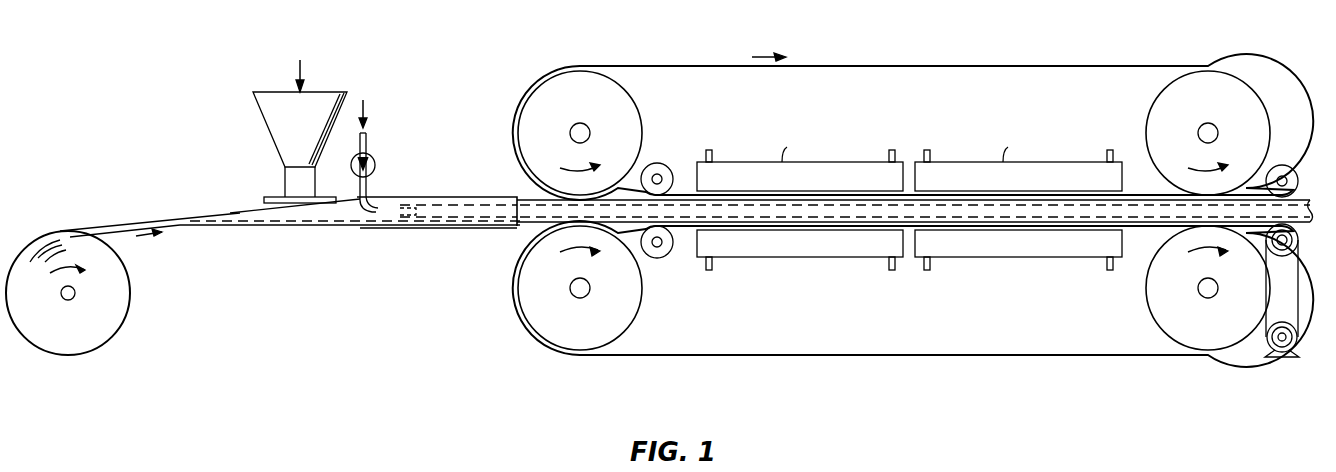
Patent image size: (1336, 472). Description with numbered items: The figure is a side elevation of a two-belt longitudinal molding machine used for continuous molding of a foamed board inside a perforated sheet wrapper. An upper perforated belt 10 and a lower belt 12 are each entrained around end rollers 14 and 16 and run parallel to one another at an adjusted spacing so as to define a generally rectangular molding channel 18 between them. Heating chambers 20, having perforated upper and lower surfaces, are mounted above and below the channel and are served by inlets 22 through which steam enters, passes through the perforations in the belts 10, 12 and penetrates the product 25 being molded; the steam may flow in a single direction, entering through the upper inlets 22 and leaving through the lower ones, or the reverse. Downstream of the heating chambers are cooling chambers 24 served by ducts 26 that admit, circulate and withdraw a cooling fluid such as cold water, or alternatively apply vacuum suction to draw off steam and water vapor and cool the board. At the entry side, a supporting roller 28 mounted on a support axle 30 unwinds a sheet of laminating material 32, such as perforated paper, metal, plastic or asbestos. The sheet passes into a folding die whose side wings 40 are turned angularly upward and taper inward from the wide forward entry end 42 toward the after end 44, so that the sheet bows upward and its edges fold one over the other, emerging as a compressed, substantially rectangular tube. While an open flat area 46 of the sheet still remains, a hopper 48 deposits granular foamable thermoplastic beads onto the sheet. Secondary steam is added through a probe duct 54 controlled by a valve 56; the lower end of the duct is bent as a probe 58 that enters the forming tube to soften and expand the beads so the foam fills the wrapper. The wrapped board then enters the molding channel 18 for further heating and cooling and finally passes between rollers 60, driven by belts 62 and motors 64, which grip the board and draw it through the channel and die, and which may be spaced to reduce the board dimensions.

The upper perforated belt 10 is at (640, 175).
The lower belt 12 is at (668, 254).
The rollers 14 is at (590, 111).
The rollers 16 is at (590, 333).
The molding channel 18 is at (526, 227).
The heating chambers 20 is at (812, 185).
The inlets 22 is at (712, 153).
The cooling chambers 24 is at (1028, 185).
The product 25 is at (1310, 228).
The ducts 26 is at (930, 153).
The supporting roller 28 is at (122, 316).
The support axle 30 is at (75, 297).
The sheet of laminating material 32 is at (147, 218).
The side wings 40 is at (436, 197).
The forward entry end 42 is at (186, 226).
The after end 44 is at (482, 230).
The open flat area 46 is at (244, 212).
The hopper 48 is at (311, 131).
The probe duct 54 is at (372, 136).
The valve 56 is at (374, 170).
The probe 58 is at (405, 218).
The rollers 60 is at (1312, 198).
The belts 62 is at (1304, 285).
The motors 64 is at (1308, 325).